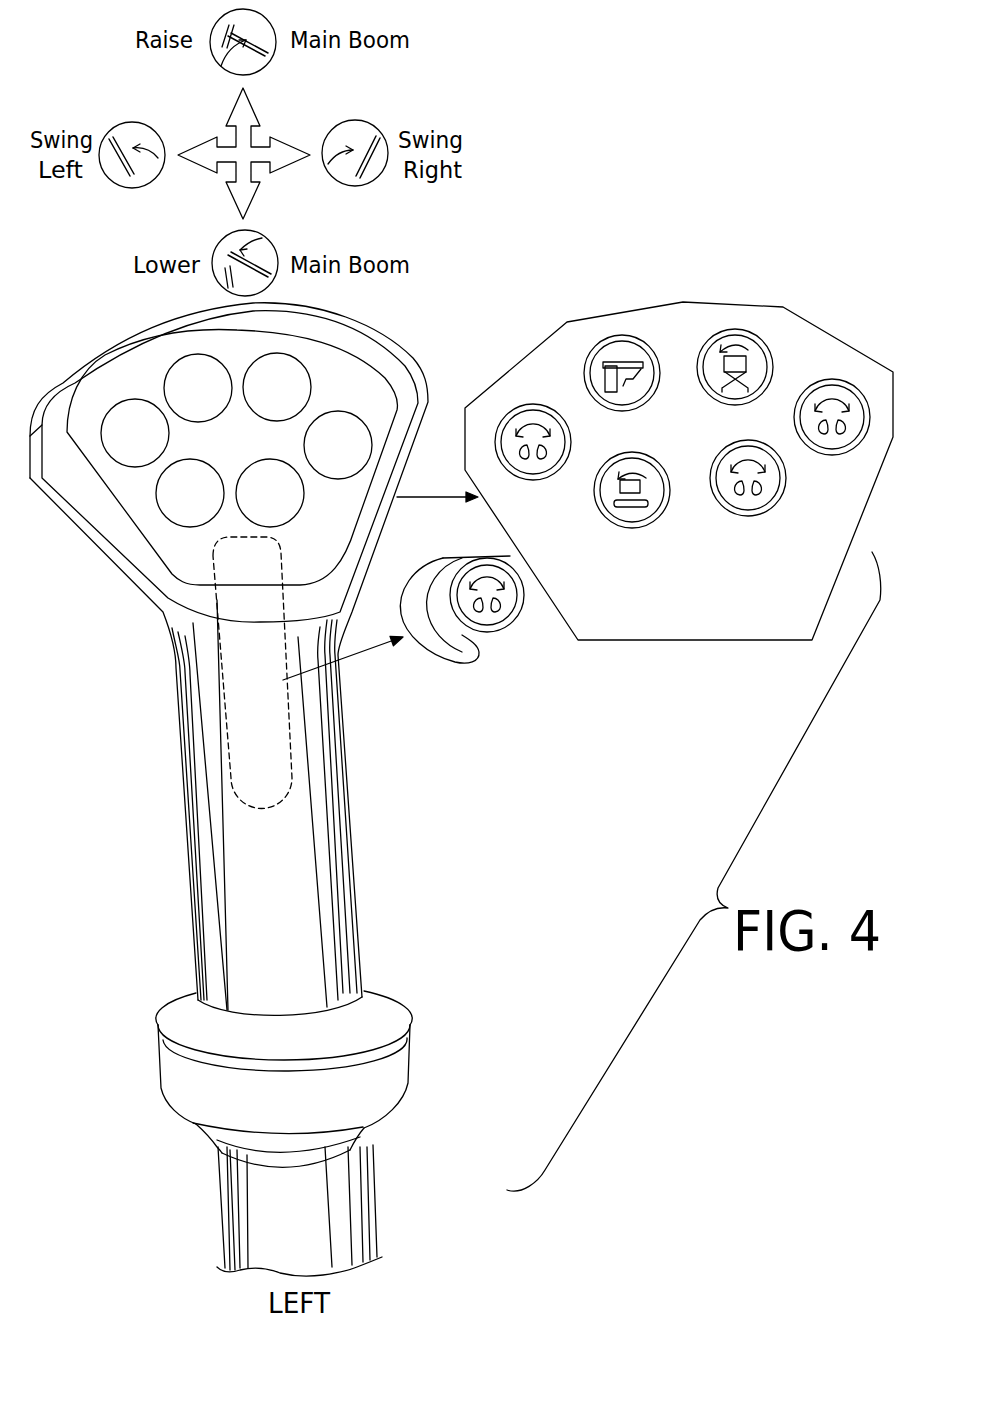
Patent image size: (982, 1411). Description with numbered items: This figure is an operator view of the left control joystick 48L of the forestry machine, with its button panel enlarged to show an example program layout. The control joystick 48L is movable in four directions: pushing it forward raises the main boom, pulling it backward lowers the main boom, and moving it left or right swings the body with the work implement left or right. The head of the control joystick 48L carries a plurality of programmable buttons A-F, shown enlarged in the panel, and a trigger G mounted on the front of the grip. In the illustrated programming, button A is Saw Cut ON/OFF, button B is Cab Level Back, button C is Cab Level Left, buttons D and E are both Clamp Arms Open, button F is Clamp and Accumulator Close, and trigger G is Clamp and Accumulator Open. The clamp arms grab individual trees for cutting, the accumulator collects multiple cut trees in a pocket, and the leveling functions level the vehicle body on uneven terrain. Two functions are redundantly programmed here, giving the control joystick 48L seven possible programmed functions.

The left control joystick 48L is at (679, 407).
The button A is at (608, 373).
The button B is at (632, 510).
The button C is at (748, 367).
The button D is at (748, 499).
The button E is at (533, 464).
The button F is at (832, 437).
The trigger G is at (440, 665).